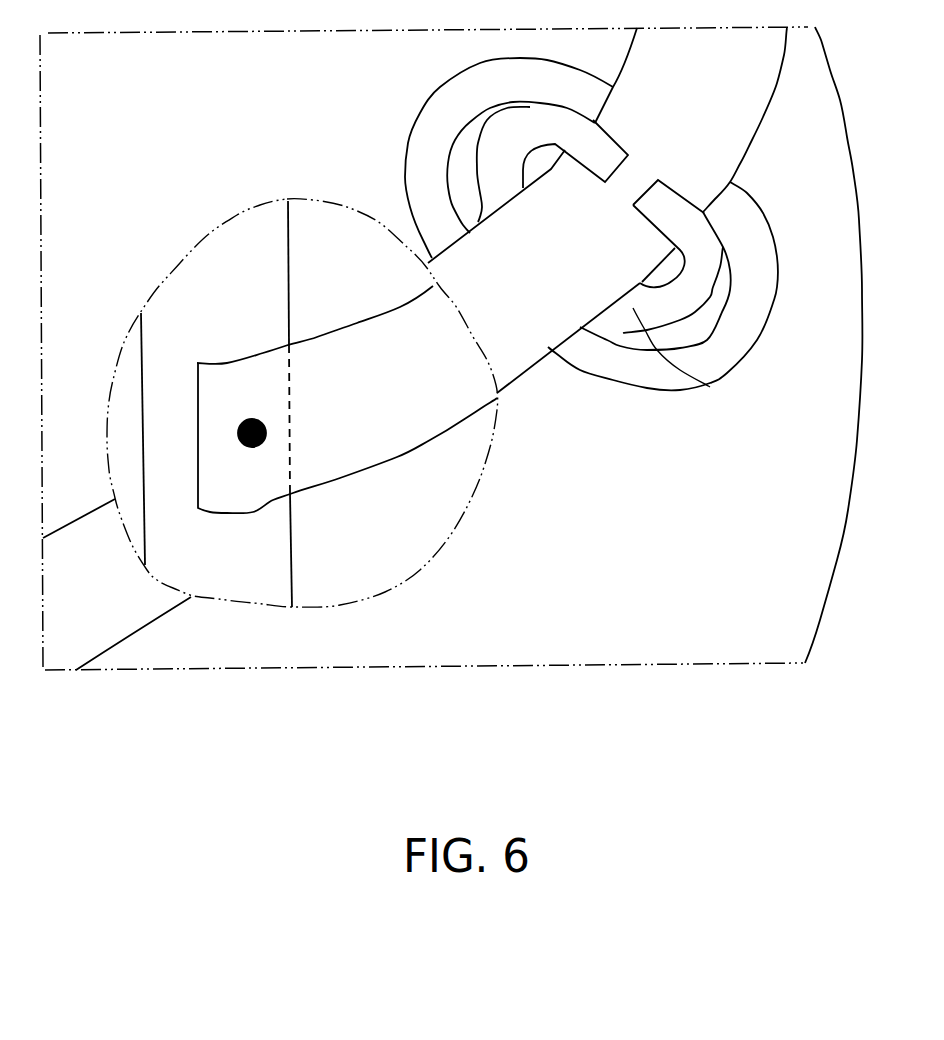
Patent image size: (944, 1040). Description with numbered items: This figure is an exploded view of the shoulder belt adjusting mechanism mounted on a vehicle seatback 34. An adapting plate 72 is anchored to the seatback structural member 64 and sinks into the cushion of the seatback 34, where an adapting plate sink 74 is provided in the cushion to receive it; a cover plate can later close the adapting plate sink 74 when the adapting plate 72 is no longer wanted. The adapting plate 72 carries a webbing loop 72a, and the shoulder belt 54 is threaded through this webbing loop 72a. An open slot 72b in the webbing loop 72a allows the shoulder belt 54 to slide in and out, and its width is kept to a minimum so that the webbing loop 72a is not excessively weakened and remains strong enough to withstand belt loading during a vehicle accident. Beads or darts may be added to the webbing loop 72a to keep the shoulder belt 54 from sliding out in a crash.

The seatback 34 is at (172, 120).
The shoulder belt 54 is at (697, 163).
The seatback structural member 64 is at (262, 315).
The adapting plate 72 is at (713, 386).
The webbing loop 72a is at (697, 237).
The open slot 72b is at (632, 180).
The adapting plate sink 74 is at (607, 363).